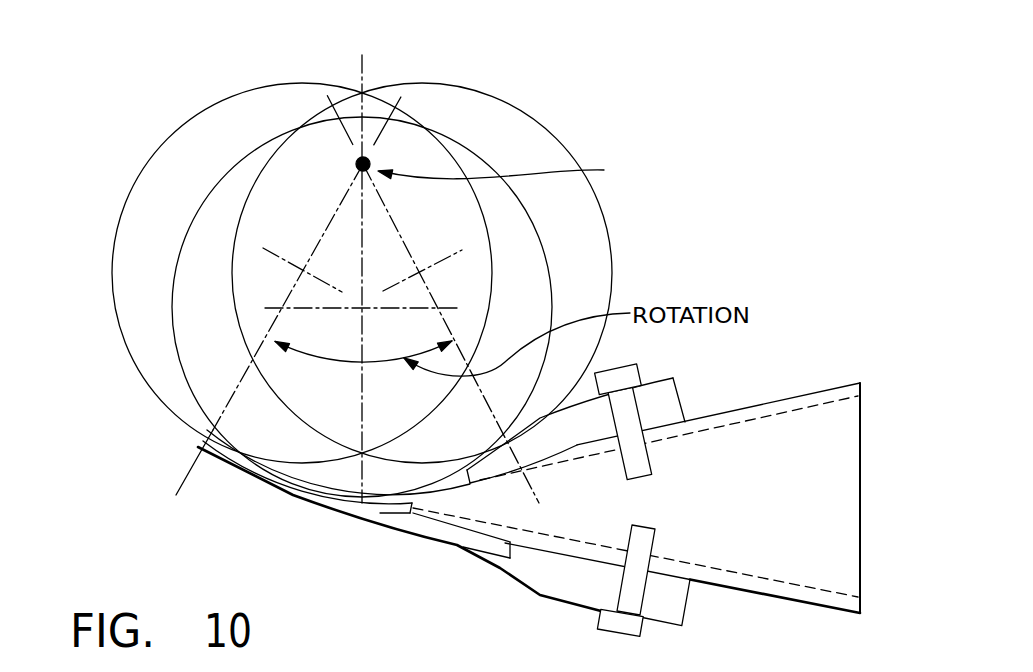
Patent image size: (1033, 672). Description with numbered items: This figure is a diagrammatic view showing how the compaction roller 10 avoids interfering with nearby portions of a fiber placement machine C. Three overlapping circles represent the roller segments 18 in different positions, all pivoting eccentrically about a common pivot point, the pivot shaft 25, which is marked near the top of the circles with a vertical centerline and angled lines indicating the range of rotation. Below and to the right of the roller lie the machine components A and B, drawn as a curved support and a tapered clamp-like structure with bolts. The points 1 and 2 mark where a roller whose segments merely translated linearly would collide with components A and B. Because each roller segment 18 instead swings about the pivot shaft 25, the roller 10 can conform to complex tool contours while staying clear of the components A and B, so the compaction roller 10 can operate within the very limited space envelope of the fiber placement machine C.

The compaction roller 10 is at (165, 108).
The roller segments 18 is at (290, 84).
The pivot shaft 25 is at (356, 164).
The interference point 1 is at (264, 478).
The interference point 2 is at (463, 478).
The fiber placement machine component A is at (240, 483).
The fiber placement machine component B is at (757, 405).
The fiber placement machine C is at (729, 589).